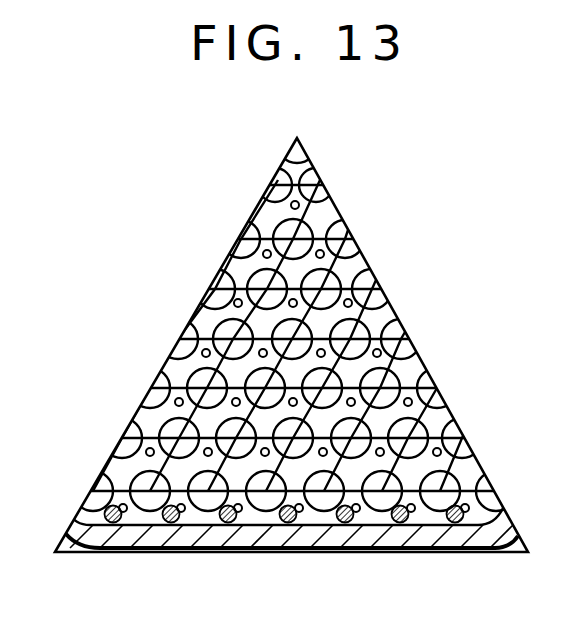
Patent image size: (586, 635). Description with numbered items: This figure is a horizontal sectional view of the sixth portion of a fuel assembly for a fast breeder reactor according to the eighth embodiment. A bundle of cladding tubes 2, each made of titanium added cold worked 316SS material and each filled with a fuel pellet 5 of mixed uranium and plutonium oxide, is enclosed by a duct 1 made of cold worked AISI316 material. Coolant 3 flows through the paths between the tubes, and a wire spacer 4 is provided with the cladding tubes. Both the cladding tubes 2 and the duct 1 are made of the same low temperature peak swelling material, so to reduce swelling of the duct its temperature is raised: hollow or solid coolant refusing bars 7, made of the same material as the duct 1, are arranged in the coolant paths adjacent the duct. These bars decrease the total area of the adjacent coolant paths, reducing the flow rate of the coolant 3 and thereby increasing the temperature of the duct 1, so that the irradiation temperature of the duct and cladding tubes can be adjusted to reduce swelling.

The duct 1 is at (457, 537).
The cladding tube 2 is at (203, 502).
The coolant 3 is at (372, 515).
The wire spacer 4 is at (247, 515).
The fuel pellet 5 is at (193, 515).
The coolant refusing bar 7 is at (304, 521).